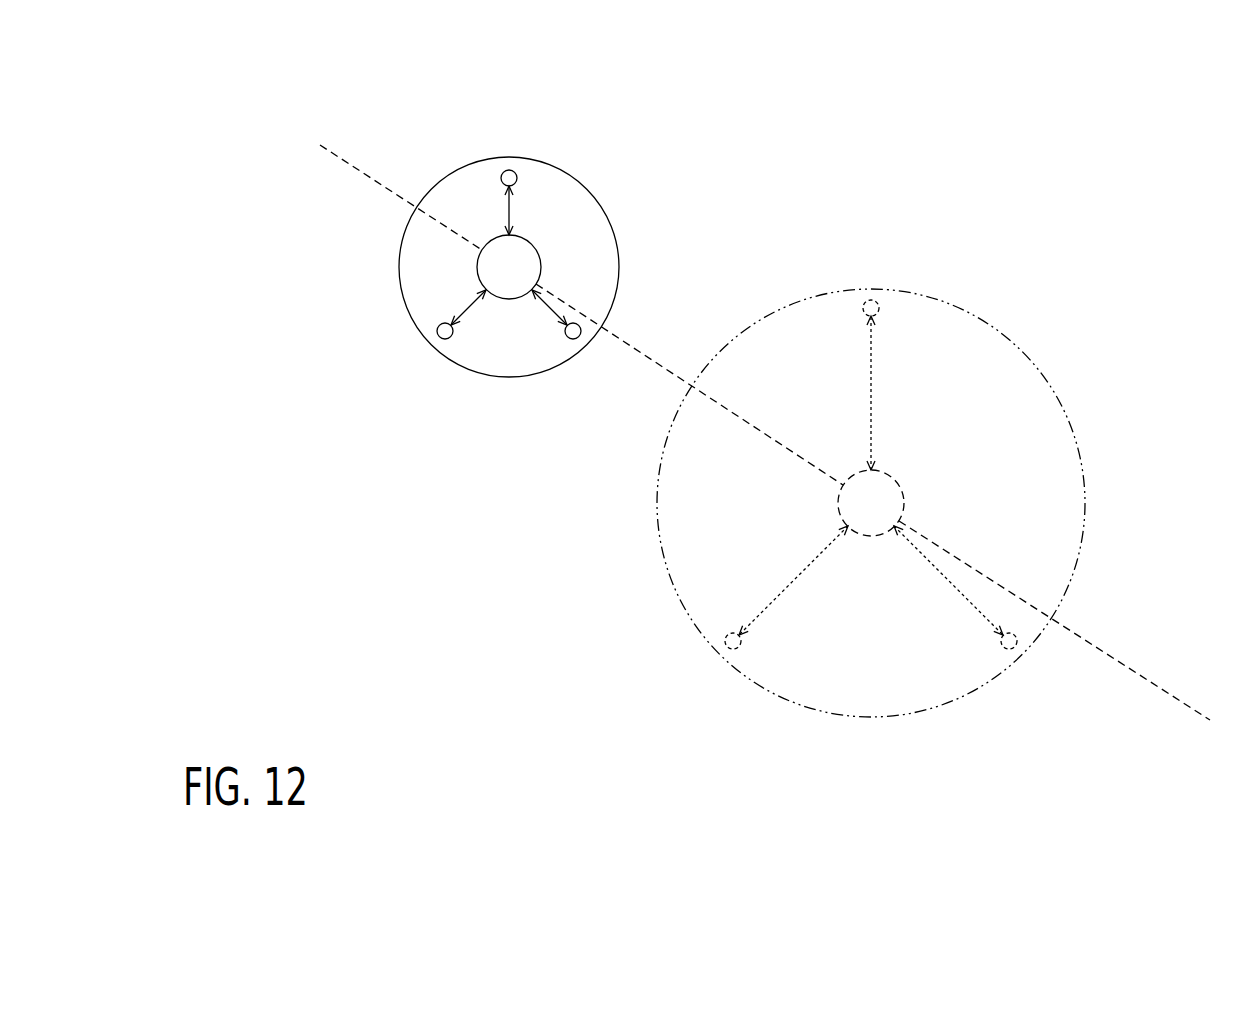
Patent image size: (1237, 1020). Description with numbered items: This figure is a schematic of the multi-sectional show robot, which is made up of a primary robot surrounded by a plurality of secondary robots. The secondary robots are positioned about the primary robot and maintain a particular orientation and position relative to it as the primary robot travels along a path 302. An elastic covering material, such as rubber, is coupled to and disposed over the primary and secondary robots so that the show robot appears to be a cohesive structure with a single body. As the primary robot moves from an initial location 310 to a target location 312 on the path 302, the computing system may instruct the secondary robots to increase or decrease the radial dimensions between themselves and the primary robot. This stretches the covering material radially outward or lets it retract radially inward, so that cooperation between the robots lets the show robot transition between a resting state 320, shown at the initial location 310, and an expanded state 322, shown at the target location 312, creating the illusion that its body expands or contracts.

The path 302 is at (656, 367).
The initial location 310 is at (355, 420).
The target location 312 is at (827, 735).
The resting state 320 is at (643, 127).
The expanded state 322 is at (1063, 735).